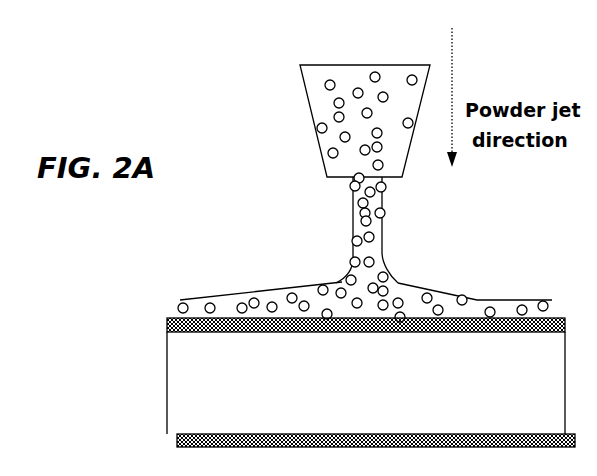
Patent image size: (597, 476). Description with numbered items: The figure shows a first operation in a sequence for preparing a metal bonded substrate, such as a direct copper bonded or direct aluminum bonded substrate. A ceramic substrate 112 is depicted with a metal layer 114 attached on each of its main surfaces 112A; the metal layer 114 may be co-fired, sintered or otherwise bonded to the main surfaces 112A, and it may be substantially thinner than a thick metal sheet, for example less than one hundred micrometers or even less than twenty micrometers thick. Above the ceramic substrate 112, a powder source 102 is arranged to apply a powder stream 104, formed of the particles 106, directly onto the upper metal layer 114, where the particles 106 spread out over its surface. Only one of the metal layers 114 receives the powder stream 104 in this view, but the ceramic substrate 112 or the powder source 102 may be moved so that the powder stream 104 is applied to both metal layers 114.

The powder source 102 is at (313, 103).
The powder stream 104 is at (410, 281).
The particles 106 is at (344, 282).
The ceramic substrate 112 is at (166, 389).
The main surfaces 112A is at (476, 338).
The metal layer 114 is at (166, 322).